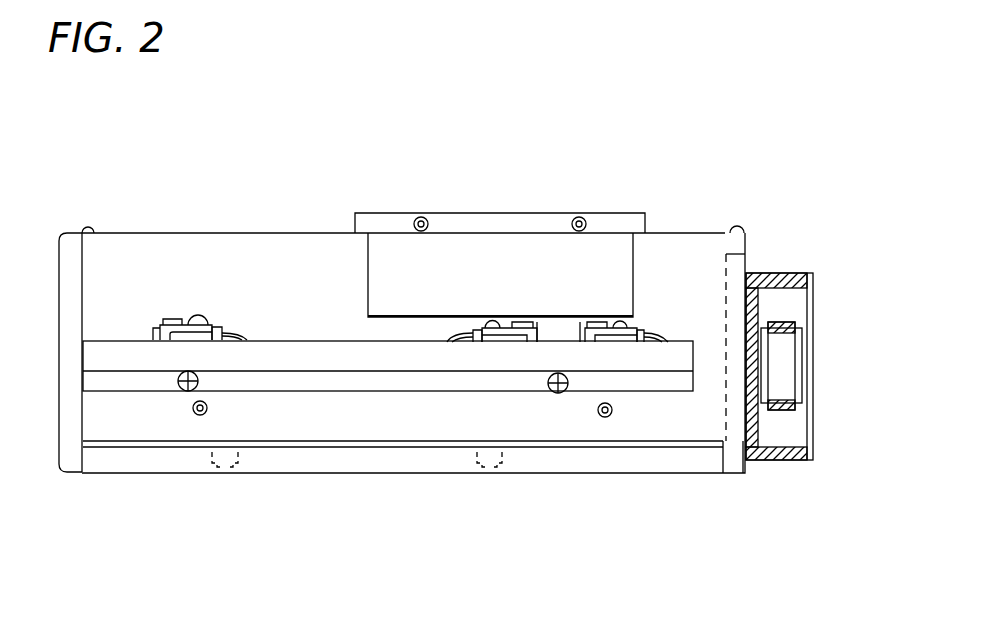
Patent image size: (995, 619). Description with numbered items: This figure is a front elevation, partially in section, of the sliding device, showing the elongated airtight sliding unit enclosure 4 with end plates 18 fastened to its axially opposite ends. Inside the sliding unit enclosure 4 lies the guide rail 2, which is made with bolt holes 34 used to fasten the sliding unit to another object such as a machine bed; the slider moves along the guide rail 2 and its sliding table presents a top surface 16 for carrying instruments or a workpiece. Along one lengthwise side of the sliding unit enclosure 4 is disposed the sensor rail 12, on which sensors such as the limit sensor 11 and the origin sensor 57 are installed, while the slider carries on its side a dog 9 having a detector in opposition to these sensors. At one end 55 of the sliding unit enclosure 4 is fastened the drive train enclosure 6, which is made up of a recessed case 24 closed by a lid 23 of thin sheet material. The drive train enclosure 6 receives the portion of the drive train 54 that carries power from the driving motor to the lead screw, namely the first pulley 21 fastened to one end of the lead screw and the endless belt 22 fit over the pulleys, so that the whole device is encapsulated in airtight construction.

The guide rail 2 is at (363, 465).
The sliding unit enclosure 4 is at (217, 258).
The drive train enclosure 6 is at (810, 272).
The dog 9 is at (405, 247).
The limit sensor 11 is at (170, 318).
The sensor rail 12 is at (148, 382).
The top surface 16 is at (517, 212).
The end plate 18 is at (73, 267).
The first pulley 21 is at (785, 373).
The endless belt 22 is at (782, 408).
The lid 23 is at (812, 310).
The case 24 is at (778, 280).
The bolt holes 34 is at (226, 467).
The drive train 54 is at (805, 344).
The end 55 is at (753, 427).
The origin sensor 57 is at (498, 335).